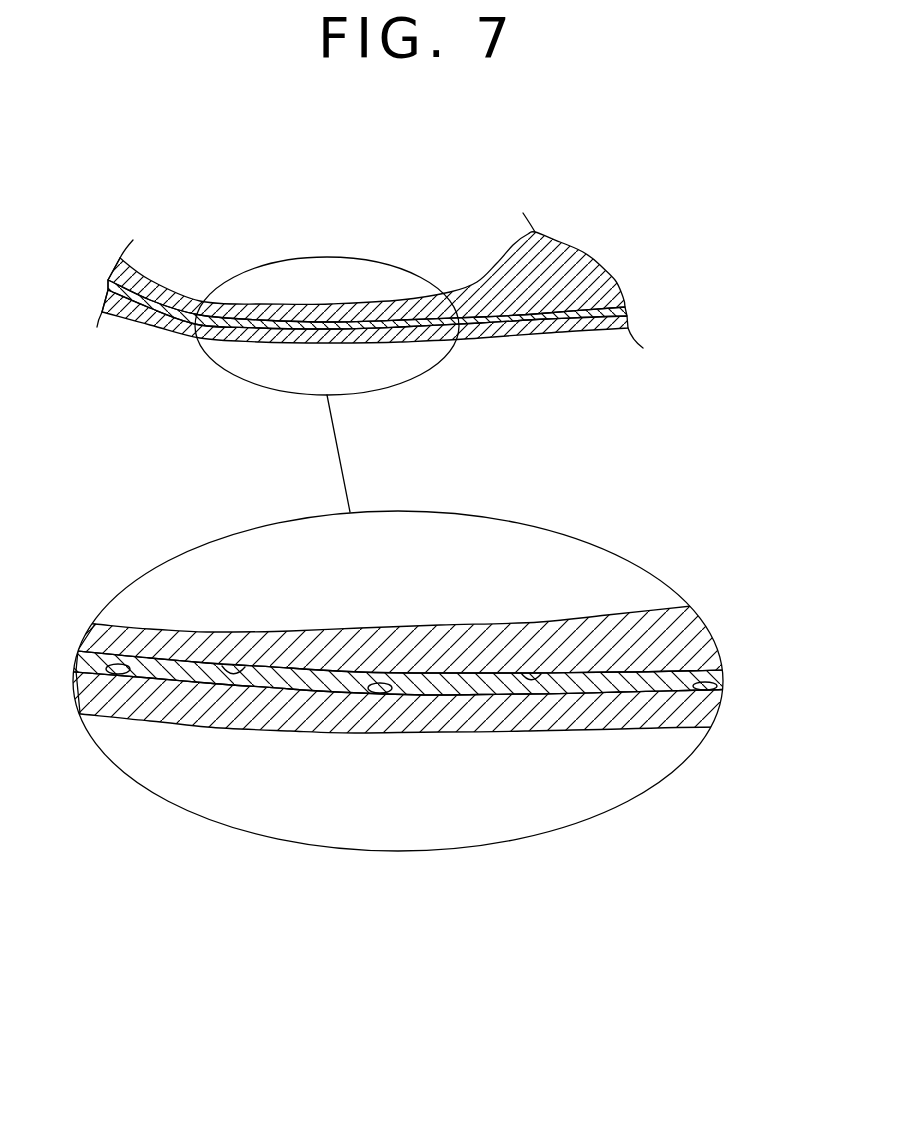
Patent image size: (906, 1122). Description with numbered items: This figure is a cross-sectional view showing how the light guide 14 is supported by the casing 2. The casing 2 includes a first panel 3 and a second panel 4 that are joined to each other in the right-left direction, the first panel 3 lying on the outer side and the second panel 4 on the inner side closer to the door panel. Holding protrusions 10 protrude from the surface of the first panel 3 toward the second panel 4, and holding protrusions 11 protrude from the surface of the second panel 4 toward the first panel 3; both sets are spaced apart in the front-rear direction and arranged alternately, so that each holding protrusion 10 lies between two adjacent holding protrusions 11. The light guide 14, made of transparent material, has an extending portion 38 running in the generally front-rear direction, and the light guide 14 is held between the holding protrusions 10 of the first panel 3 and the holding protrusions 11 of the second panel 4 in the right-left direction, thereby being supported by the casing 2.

The casing 2 is at (583, 252).
The first panel 3 is at (505, 340).
The second panel 4 is at (477, 282).
The extending portion 38 is at (633, 308).
The light guide 14 is at (107, 285).
The holding protrusions 11 is at (225, 665).
The holding protrusions 10 is at (128, 680).